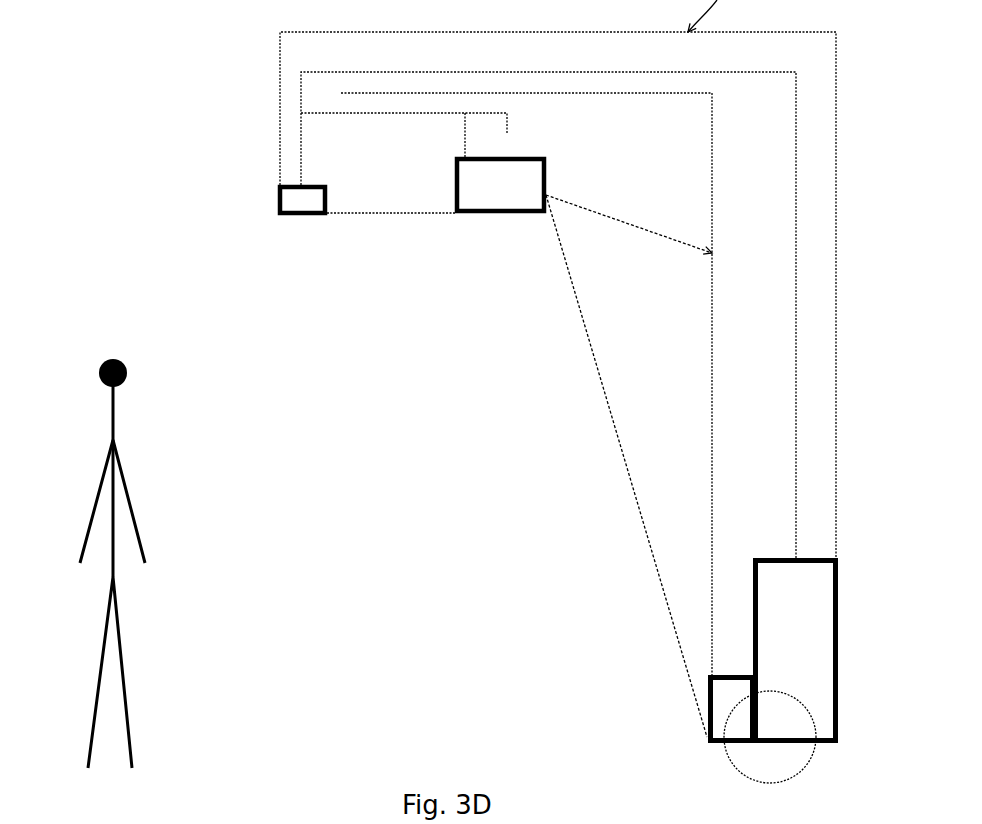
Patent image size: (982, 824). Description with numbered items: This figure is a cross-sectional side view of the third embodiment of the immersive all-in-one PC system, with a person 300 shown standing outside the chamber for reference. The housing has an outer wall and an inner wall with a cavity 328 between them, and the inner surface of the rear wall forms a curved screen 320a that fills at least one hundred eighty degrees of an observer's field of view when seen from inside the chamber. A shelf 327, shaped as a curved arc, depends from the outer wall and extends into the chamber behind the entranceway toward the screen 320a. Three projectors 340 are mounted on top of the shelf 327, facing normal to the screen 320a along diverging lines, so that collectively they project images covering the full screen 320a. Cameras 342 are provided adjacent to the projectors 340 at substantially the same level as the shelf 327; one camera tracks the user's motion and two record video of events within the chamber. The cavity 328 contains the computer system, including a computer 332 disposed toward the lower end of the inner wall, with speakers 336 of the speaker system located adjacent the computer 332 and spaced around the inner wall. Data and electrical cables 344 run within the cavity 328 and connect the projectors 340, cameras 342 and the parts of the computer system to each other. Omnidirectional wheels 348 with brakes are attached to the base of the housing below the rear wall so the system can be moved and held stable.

The user 300 is at (70, 447).
The curved screen 320a is at (712, 433).
The shelf 327 is at (372, 215).
The cavity 328 is at (772, 242).
The computer 332 is at (777, 607).
The speakers 336 is at (727, 697).
The projectors 340 is at (498, 199).
The cameras 342 is at (293, 206).
The data and electrical cables 344 is at (797, 134).
The omnidirectional wheels 348 is at (750, 757).